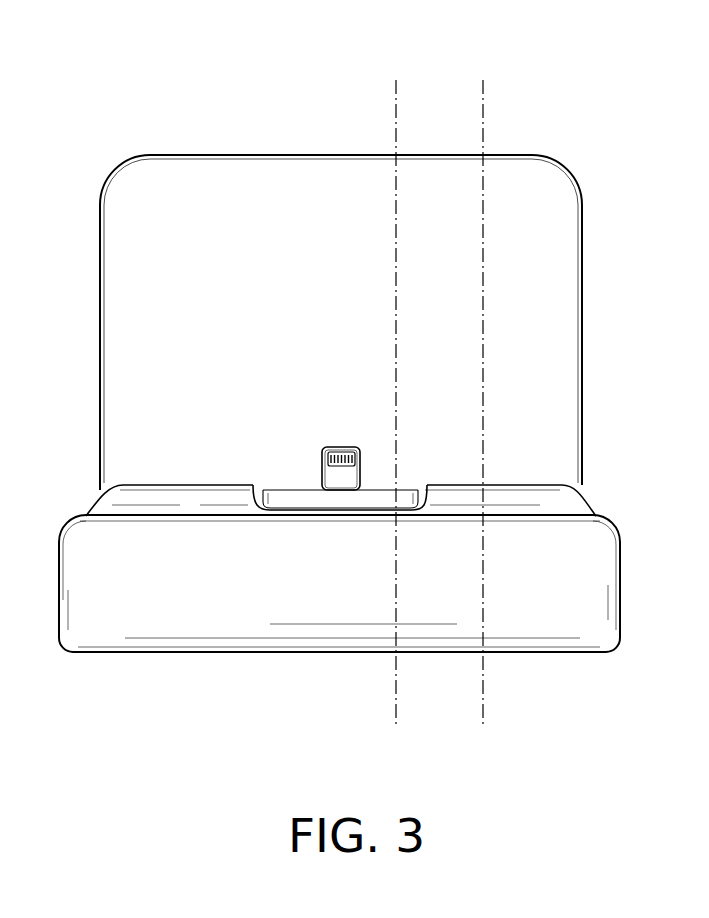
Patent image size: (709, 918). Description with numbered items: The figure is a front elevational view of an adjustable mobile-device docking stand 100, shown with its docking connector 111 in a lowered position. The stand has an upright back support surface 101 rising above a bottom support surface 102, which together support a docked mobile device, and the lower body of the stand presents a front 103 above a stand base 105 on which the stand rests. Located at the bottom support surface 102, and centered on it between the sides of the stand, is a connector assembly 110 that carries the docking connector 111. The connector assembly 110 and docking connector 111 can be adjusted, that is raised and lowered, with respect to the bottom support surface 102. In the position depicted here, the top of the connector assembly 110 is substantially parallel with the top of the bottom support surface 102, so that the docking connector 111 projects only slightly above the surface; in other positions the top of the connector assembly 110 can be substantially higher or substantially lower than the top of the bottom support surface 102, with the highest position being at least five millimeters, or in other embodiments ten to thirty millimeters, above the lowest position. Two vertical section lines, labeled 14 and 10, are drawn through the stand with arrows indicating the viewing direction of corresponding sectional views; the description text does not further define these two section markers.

The adjustable mobile-device docking stand 100 is at (163, 93).
The back support surface 101 is at (542, 265).
The bottom support surface 102 is at (557, 505).
The front 103 is at (497, 605).
The stand base 105 is at (120, 652).
The connector assembly 110 is at (378, 497).
The docking connector 111 is at (333, 478).
The section line 14 is at (364, 708).
The section line 10 is at (451, 708).